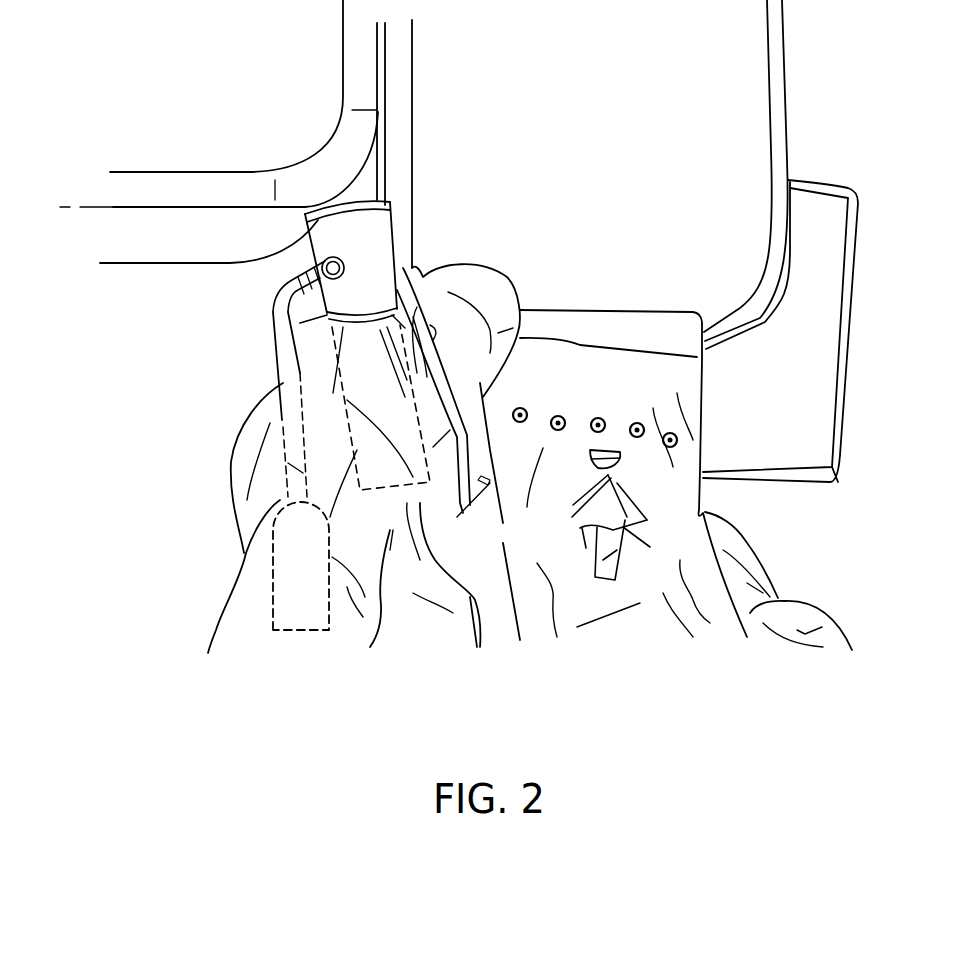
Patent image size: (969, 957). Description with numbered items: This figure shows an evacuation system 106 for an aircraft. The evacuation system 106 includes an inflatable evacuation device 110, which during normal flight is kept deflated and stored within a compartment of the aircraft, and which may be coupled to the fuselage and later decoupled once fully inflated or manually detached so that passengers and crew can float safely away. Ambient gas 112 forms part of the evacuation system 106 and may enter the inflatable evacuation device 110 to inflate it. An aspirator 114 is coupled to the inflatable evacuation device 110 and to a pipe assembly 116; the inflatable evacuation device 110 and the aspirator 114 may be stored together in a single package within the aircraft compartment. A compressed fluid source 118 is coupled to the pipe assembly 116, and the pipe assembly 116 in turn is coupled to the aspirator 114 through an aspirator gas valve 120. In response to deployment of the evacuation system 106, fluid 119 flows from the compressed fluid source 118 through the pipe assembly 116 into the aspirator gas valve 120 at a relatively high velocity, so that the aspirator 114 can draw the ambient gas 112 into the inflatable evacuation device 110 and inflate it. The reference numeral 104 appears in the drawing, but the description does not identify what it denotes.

The seat frame / seat back panel 104 is at (783, 42).
The evacuation system 106 is at (112, 414).
The inflatable evacuation device 110 is at (493, 622).
The ambient gas 112 is at (325, 141).
The aspirator 114 is at (395, 218).
The pipe assembly 116 is at (277, 342).
The compressed fluid source 118 is at (283, 632).
The fluid 119 is at (318, 579).
The aspirator gas valve 120 is at (322, 268).